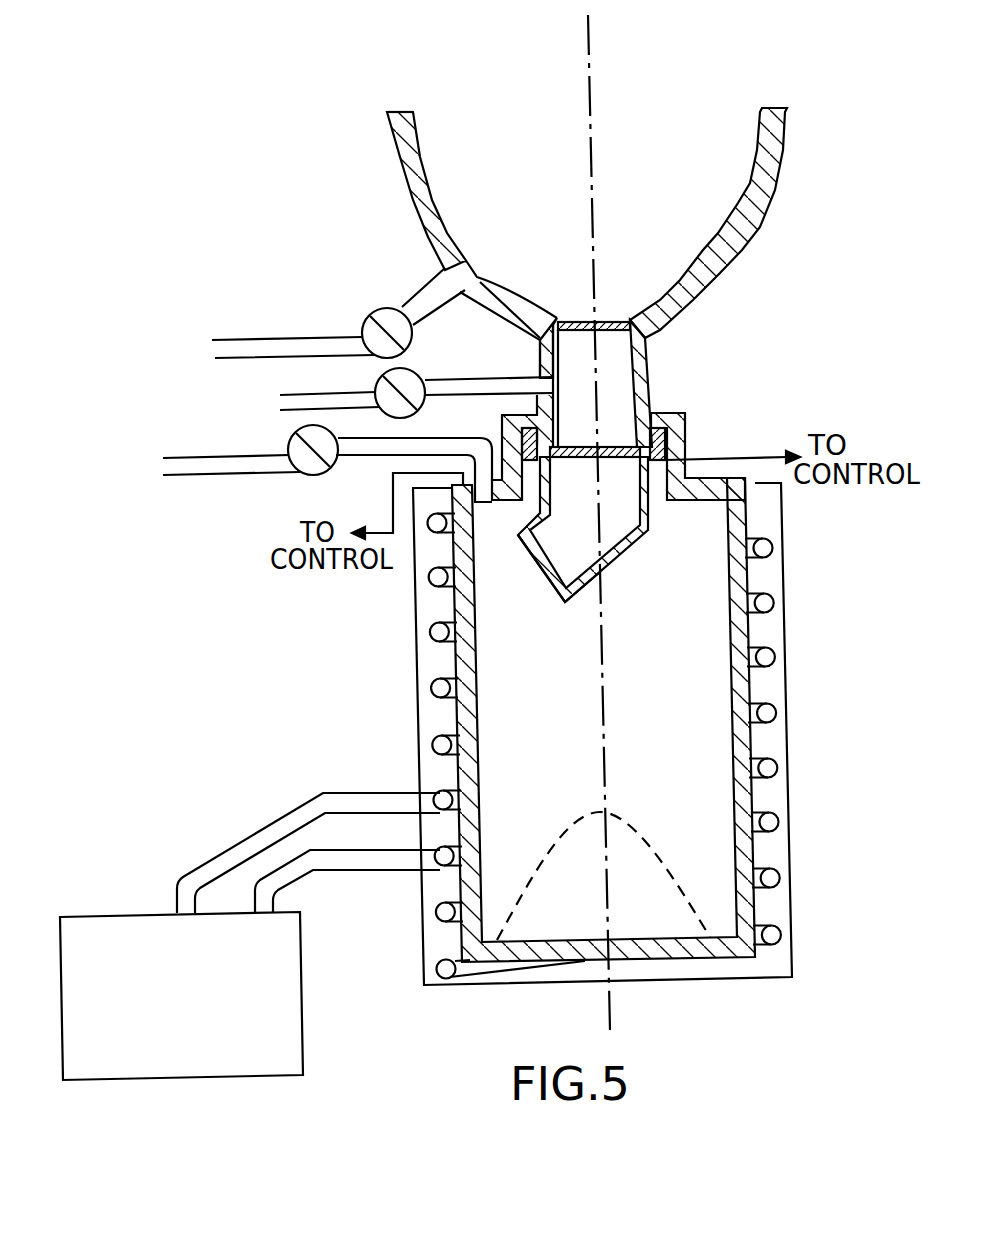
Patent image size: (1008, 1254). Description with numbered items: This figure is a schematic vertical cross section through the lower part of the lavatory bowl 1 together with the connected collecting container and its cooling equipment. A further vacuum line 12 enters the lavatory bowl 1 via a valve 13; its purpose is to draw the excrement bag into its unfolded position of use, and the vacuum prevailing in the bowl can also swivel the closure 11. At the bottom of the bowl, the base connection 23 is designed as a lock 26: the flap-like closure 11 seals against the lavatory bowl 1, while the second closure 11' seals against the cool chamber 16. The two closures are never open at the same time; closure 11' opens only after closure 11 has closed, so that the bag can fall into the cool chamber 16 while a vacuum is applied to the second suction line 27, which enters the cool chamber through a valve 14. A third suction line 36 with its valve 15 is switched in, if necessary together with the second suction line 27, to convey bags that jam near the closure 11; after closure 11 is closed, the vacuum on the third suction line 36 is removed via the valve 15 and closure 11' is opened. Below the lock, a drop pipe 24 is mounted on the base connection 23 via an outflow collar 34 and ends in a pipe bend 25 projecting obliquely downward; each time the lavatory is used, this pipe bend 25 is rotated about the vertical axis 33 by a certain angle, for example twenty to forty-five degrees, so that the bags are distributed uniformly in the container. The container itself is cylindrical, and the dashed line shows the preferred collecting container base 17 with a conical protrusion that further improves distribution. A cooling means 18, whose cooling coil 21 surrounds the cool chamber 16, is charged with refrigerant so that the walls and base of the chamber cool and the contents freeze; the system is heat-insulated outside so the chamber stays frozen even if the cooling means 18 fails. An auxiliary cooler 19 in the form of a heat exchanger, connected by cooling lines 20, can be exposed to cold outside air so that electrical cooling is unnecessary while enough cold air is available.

The lavatory bowl 1 is at (762, 188).
The closure 11 is at (625, 337).
The closure 11' is at (595, 428).
The vacuum line 12 is at (260, 342).
The valve 13 is at (386, 318).
The valve 14 is at (305, 466).
The valve 15 is at (383, 393).
The cool chamber 16 is at (783, 571).
The collecting container base 17 is at (683, 903).
The cooling means 18 is at (336, 720).
The auxiliary cooler 19 is at (118, 935).
The cooling lines 20 is at (273, 830).
The cooling coil 21 is at (776, 767).
The base connection 23 is at (647, 357).
The drop pipe 24 is at (612, 512).
The pipe bend 25 is at (648, 538).
The lock 26 is at (590, 390).
The second suction line 27 is at (215, 462).
The vertical axis 33 is at (592, 52).
The outflow collar 34 is at (667, 443).
The third suction line 36 is at (493, 383).